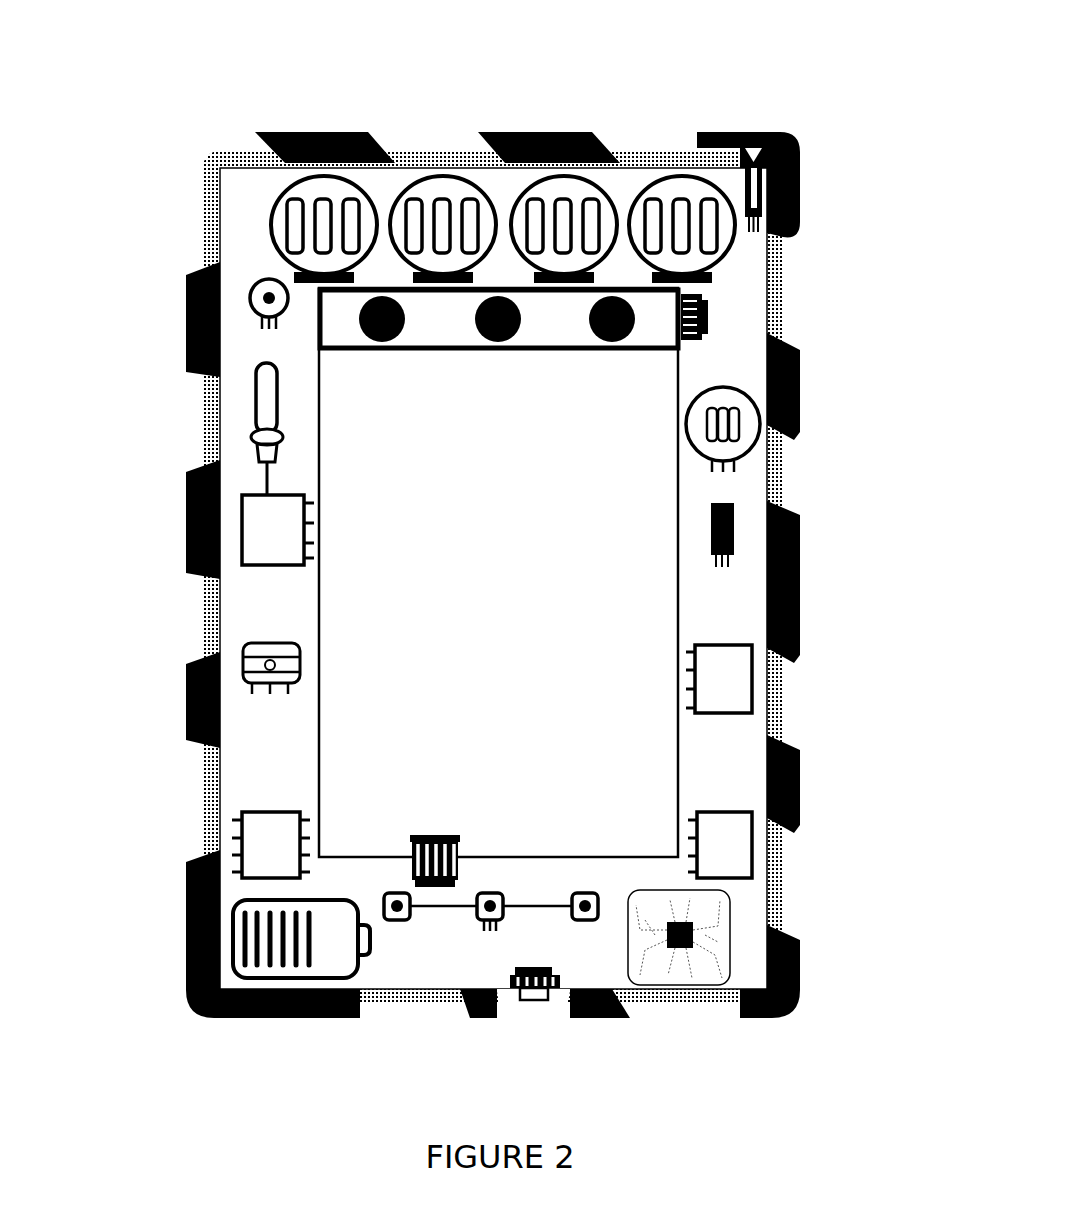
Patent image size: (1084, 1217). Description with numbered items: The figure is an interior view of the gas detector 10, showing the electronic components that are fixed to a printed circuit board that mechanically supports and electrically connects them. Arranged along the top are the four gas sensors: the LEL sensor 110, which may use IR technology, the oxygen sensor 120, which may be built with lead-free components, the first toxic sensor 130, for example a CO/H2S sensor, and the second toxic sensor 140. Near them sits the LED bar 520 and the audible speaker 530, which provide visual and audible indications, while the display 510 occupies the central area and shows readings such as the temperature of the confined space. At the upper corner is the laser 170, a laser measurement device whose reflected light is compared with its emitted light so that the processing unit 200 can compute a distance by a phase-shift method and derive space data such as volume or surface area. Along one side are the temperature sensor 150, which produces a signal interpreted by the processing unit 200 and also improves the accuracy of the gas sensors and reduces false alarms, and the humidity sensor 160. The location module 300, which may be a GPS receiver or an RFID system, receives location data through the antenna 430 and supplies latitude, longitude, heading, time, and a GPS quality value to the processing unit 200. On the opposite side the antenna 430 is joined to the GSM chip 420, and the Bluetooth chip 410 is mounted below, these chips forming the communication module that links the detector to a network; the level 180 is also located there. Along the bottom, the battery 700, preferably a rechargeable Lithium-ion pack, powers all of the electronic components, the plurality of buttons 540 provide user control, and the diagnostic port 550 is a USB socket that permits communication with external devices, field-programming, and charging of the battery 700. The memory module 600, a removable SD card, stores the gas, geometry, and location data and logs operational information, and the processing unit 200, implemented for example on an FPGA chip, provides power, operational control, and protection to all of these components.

The gas detector 10 is at (133, 93).
The LEL sensor 110 is at (668, 182).
The oxygen sensor 120 is at (283, 202).
The first toxic sensor 130 is at (425, 176).
The second toxic sensor 140 is at (515, 202).
The temperature sensor 150 is at (708, 503).
The humidity sensor 160 is at (752, 463).
The laser 170 is at (752, 150).
The level 180 is at (243, 640).
The processing unit 200 is at (684, 965).
The location module 300 is at (753, 683).
The Bluetooth chip 410 is at (300, 813).
The GSM chip 420 is at (305, 496).
The antenna 430 is at (283, 438).
The display 510 is at (462, 850).
The LED bar 520 is at (496, 343).
The audible speaker 530 is at (250, 290).
The buttons 540 is at (408, 922).
The diagnostic port 550 is at (550, 1003).
The memory module 600 is at (753, 852).
The battery 700 is at (367, 958).